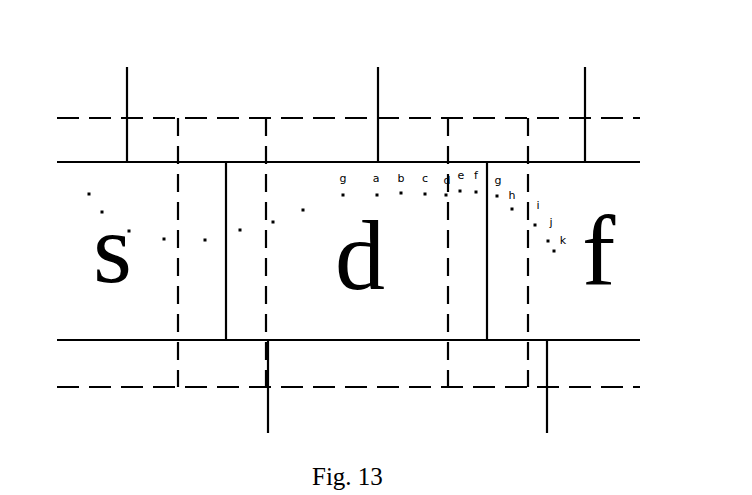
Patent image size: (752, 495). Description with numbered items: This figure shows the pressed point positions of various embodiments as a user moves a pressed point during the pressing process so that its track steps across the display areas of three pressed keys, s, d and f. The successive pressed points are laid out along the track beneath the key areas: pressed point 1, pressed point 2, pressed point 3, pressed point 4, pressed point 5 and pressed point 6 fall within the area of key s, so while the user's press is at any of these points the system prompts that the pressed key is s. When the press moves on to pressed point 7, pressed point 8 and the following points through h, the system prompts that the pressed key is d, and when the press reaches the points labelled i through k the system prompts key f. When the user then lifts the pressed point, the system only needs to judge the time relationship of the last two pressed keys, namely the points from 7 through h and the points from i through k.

The pressed point 1 is at (88, 184).
The pressed point 2 is at (106, 202).
The pressed point 3 is at (131, 215).
The pressed point 4 is at (161, 226).
The pressed point 5 is at (203, 226).
The pressed point 6 is at (240, 220).
The pressed point 7 is at (270, 210).
The pressed point 8 is at (300, 200).